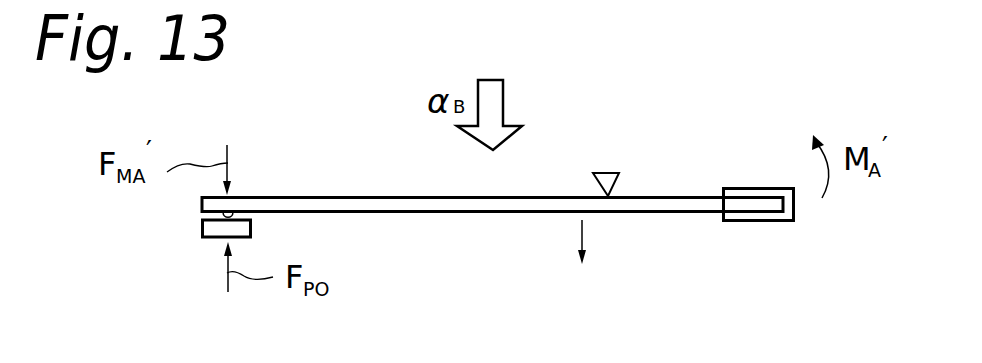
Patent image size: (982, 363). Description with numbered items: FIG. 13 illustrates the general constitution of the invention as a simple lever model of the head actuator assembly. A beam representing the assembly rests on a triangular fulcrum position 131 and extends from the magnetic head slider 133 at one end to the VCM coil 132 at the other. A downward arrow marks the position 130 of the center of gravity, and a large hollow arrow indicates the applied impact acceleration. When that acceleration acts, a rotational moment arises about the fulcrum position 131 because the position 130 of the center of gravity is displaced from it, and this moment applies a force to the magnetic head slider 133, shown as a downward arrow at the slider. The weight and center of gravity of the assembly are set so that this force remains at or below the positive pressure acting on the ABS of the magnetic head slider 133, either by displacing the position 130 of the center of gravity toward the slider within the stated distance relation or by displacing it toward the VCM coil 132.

The position of center of gravity 130 is at (583, 233).
The fulcrum position 131 is at (620, 183).
The VCM coil 132 is at (797, 208).
The magnetic head slider 133 is at (202, 228).